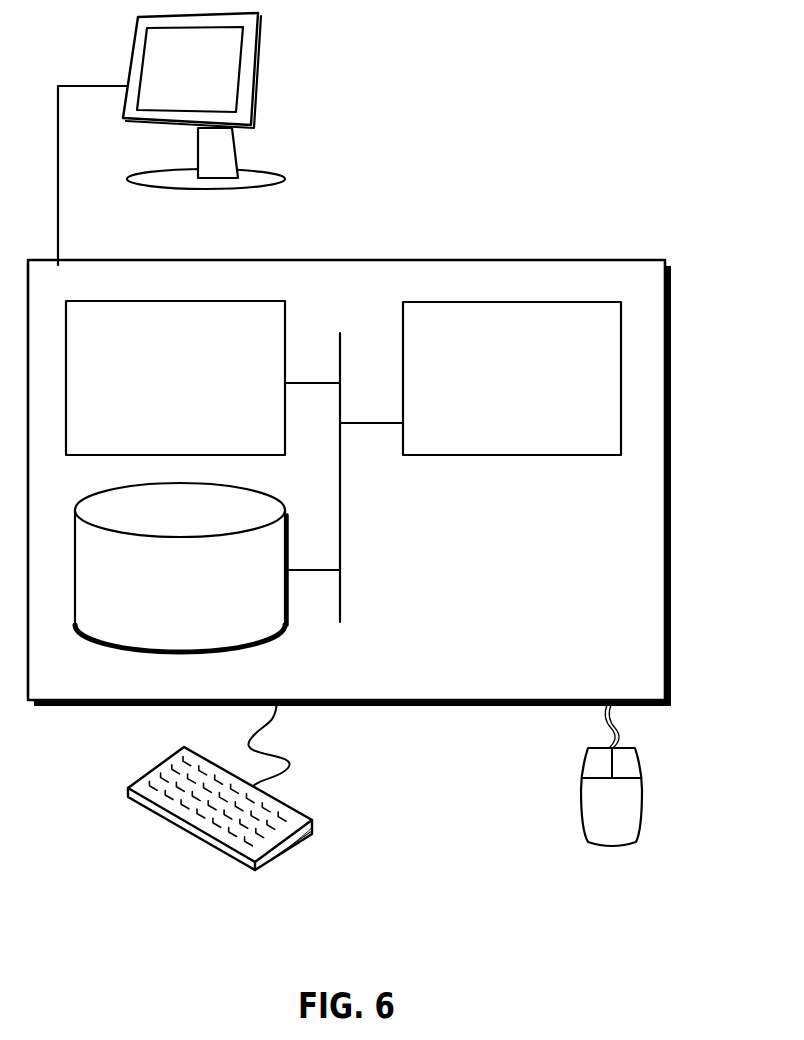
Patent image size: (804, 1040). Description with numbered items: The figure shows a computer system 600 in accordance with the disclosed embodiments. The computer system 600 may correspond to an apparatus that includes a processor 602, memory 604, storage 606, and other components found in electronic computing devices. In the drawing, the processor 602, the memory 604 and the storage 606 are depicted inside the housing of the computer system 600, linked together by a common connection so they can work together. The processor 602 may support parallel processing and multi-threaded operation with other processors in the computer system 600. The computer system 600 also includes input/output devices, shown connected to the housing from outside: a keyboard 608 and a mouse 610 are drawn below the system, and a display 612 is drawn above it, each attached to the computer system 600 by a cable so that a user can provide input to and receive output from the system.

The computer system 600 is at (393, 238).
The processor 602 is at (535, 391).
The memory 604 is at (196, 389).
The storage device 606 is at (202, 596).
The keyboard 608 is at (147, 810).
The mouse 610 is at (630, 819).
The display monitor 612 is at (171, 139).